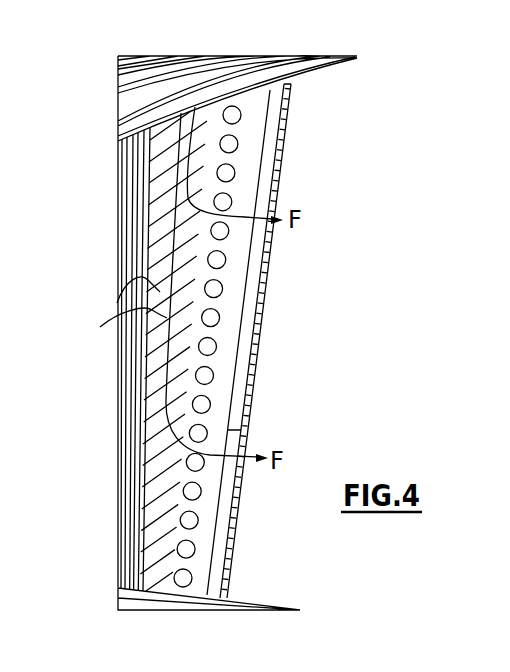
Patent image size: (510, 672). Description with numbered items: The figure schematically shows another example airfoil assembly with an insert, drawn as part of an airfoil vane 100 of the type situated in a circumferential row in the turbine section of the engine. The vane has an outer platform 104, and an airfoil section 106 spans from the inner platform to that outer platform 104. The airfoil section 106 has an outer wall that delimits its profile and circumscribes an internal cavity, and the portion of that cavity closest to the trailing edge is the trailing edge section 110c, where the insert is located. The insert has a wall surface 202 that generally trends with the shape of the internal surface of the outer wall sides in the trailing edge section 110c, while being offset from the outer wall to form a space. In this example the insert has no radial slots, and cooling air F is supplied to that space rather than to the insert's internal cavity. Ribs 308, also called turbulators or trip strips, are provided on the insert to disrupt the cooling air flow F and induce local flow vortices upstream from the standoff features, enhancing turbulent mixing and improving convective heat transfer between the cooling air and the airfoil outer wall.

The airfoil vane 100 is at (84, 128).
The outer platform 104 is at (331, 59).
The airfoil section 106 is at (290, 98).
The trailing edge section 110c is at (222, 85).
The wall surface 202 is at (168, 206).
The ribs 308 is at (117, 303).